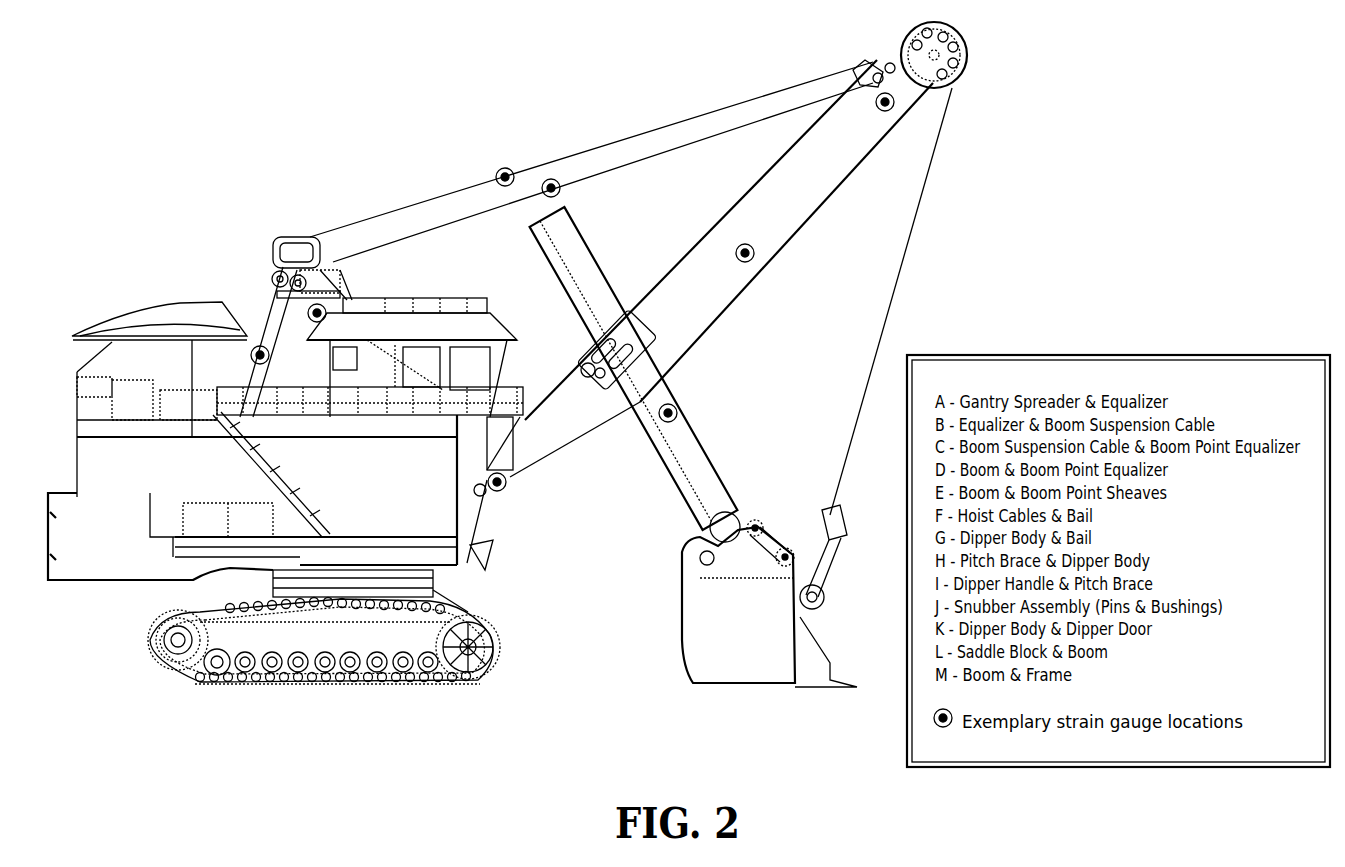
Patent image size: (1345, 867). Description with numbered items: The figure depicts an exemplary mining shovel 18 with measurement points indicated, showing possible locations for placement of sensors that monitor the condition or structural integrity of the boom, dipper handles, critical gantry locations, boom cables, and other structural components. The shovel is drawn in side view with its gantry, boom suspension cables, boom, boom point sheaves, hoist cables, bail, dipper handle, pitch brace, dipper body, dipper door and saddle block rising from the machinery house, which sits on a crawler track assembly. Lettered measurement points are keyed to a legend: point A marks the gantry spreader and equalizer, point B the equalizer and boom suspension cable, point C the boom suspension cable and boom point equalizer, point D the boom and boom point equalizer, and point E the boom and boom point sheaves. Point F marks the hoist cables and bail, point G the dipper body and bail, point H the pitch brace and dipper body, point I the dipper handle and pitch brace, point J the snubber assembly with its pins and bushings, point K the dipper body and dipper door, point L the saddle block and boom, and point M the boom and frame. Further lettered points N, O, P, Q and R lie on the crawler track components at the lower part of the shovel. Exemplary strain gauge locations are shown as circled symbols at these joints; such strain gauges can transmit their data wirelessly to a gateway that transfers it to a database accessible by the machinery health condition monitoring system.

The mining shovel 18 is at (428, 86).
The gantry spreader and equalizer A is at (283, 260).
The equalizer and boom suspension cable B is at (297, 242).
The boom suspension cable and boom point equalizer C is at (860, 70).
The boom and boom point equalizer D is at (721, 268).
The boom and boom point sheaves E is at (967, 45).
The hoist cables and bail F is at (840, 523).
The dipper body and bail G is at (807, 587).
The pitch brace and dipper body H is at (783, 540).
The dipper handle and pitch brace I is at (727, 510).
The snubber assembly (pins and bushings) J is at (690, 540).
The dipper body and dipper door K is at (700, 558).
The saddle block and boom L is at (583, 353).
The boom and frame M is at (487, 495).
The rear idler N is at (487, 627).
The front idler O is at (183, 640).
The track roller P is at (200, 662).
The lower track roller Q is at (428, 667).
The crawler track R is at (203, 680).